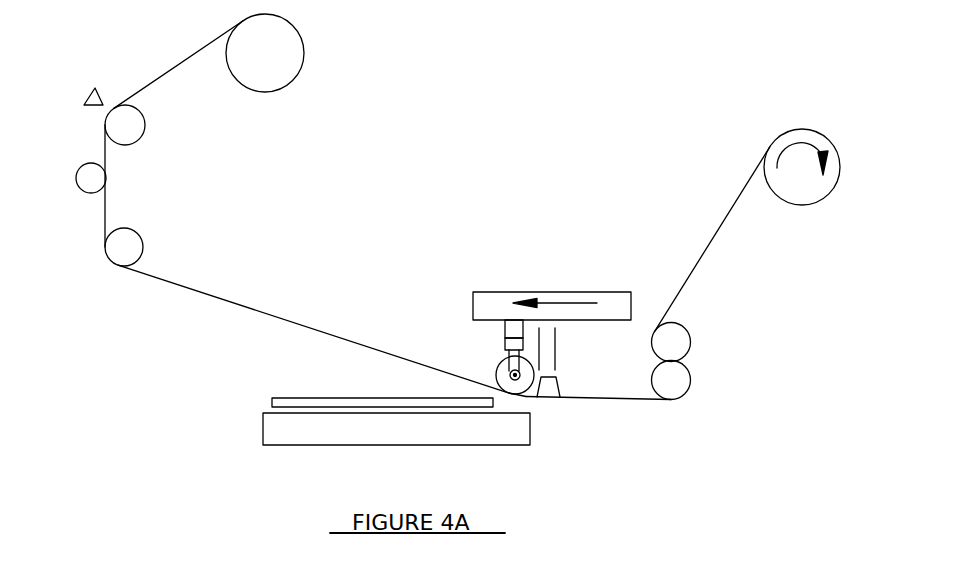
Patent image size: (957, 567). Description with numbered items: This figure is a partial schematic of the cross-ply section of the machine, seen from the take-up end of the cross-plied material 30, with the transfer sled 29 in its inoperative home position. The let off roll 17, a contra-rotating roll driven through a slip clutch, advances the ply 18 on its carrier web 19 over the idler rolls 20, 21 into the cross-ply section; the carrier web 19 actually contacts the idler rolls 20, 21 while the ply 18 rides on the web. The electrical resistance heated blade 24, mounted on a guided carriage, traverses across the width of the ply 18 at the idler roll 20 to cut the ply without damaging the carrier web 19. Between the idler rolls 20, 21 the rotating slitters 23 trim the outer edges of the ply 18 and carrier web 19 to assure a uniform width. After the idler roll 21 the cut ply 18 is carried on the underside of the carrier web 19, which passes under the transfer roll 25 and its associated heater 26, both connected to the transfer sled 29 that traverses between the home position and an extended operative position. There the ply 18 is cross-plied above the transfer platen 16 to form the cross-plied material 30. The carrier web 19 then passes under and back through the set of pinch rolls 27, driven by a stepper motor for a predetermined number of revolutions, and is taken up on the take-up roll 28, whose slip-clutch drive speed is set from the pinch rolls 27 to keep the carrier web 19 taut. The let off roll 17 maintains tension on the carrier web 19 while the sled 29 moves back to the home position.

The transfer platen 16 is at (267, 428).
The let off roll 17 is at (270, 45).
The ply 18 is at (190, 55).
The carrier web 19 is at (698, 262).
The idler roll 20 is at (125, 132).
The idler roll 21 is at (118, 257).
The slitters 23 is at (92, 163).
The blade 24 is at (98, 88).
The transfer roll 25 is at (503, 368).
The heater 26 is at (557, 380).
The pinch rolls 27 is at (693, 362).
The take-up roll 28 is at (820, 197).
The transfer sled 29 is at (578, 292).
The cross-plied material 30 is at (298, 398).